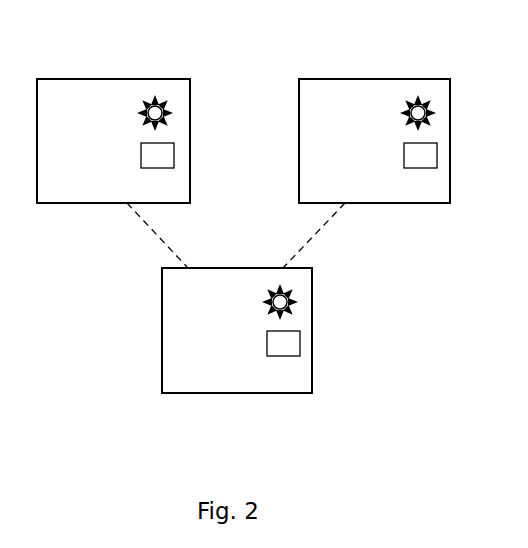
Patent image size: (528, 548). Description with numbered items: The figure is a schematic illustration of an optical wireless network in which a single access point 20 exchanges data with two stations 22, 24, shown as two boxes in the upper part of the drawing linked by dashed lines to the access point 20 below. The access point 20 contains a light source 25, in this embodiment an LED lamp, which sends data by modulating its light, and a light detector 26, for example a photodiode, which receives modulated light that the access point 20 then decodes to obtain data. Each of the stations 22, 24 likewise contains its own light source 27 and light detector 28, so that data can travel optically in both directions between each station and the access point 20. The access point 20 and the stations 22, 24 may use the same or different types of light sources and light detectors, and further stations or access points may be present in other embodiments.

The access point 20 is at (187, 395).
The station 22 is at (63, 79).
The station 24 is at (385, 79).
The light source 25 is at (287, 307).
The light detector 26 is at (300, 340).
The light source 27 is at (162, 118).
The light detector 28 is at (174, 151).